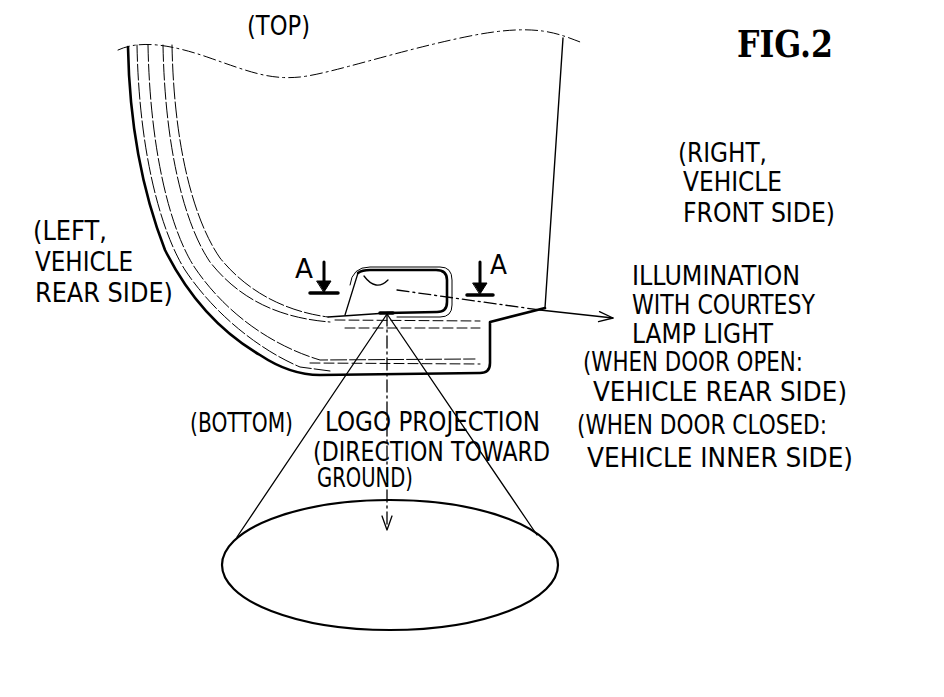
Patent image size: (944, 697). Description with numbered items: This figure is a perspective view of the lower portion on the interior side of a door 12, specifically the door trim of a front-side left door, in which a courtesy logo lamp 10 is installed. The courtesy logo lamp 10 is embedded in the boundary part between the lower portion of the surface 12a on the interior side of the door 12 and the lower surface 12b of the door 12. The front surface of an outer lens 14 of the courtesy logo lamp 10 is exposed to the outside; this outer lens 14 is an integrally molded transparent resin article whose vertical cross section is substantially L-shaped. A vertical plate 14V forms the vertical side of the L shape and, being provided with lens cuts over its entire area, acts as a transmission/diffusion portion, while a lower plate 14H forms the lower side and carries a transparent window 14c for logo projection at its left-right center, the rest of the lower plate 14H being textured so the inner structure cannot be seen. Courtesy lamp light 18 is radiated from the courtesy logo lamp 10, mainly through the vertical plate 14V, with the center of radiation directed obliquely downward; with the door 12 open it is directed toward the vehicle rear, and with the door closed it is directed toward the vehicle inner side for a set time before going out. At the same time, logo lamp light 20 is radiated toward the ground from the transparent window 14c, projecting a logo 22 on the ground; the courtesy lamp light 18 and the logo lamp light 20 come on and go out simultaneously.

The courtesy logo lamp 10 is at (403, 263).
The door 12 is at (572, 90).
The surface on the interior side of the door 12a is at (512, 127).
The lower surface of the door 12b is at (478, 310).
The outer lens 14 is at (417, 283).
The vertical plate 14V is at (360, 277).
The lower plate 14H is at (367, 312).
The transparent window 14c is at (387, 315).
The courtesy lamp light 18 is at (579, 316).
The logo lamp light 20 is at (268, 488).
The logo 22 is at (503, 537).